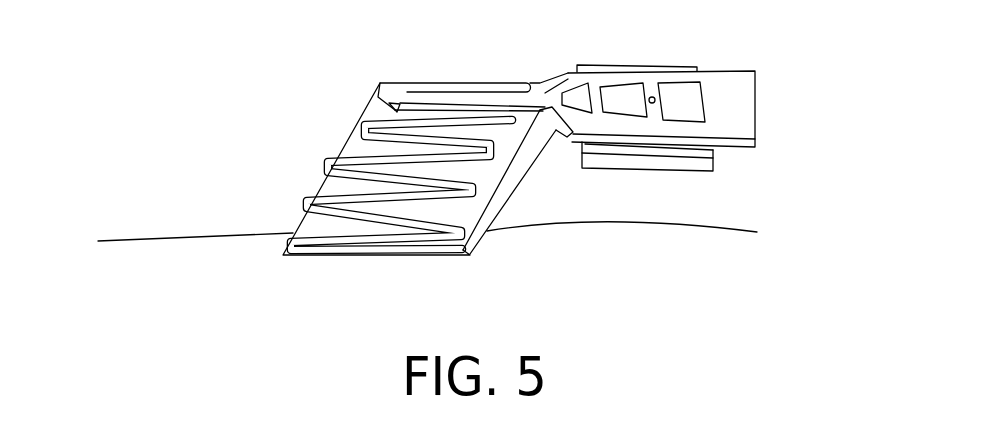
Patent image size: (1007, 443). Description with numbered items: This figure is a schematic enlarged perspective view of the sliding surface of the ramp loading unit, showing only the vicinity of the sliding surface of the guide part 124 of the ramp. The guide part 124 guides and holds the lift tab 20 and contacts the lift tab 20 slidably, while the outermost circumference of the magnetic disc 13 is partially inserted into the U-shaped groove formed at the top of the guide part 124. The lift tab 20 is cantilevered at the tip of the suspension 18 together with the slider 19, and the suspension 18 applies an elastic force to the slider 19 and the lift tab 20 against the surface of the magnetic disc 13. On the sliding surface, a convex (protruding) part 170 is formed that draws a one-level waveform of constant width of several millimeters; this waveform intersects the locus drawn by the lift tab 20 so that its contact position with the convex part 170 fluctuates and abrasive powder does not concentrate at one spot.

The guide part 124 is at (347, 132).
The convex (protruding) part 170 is at (328, 168).
The lift tab 20 is at (413, 102).
The suspension 18 is at (708, 80).
The slider 19 is at (672, 175).
The magnetic disc 13 is at (597, 302).